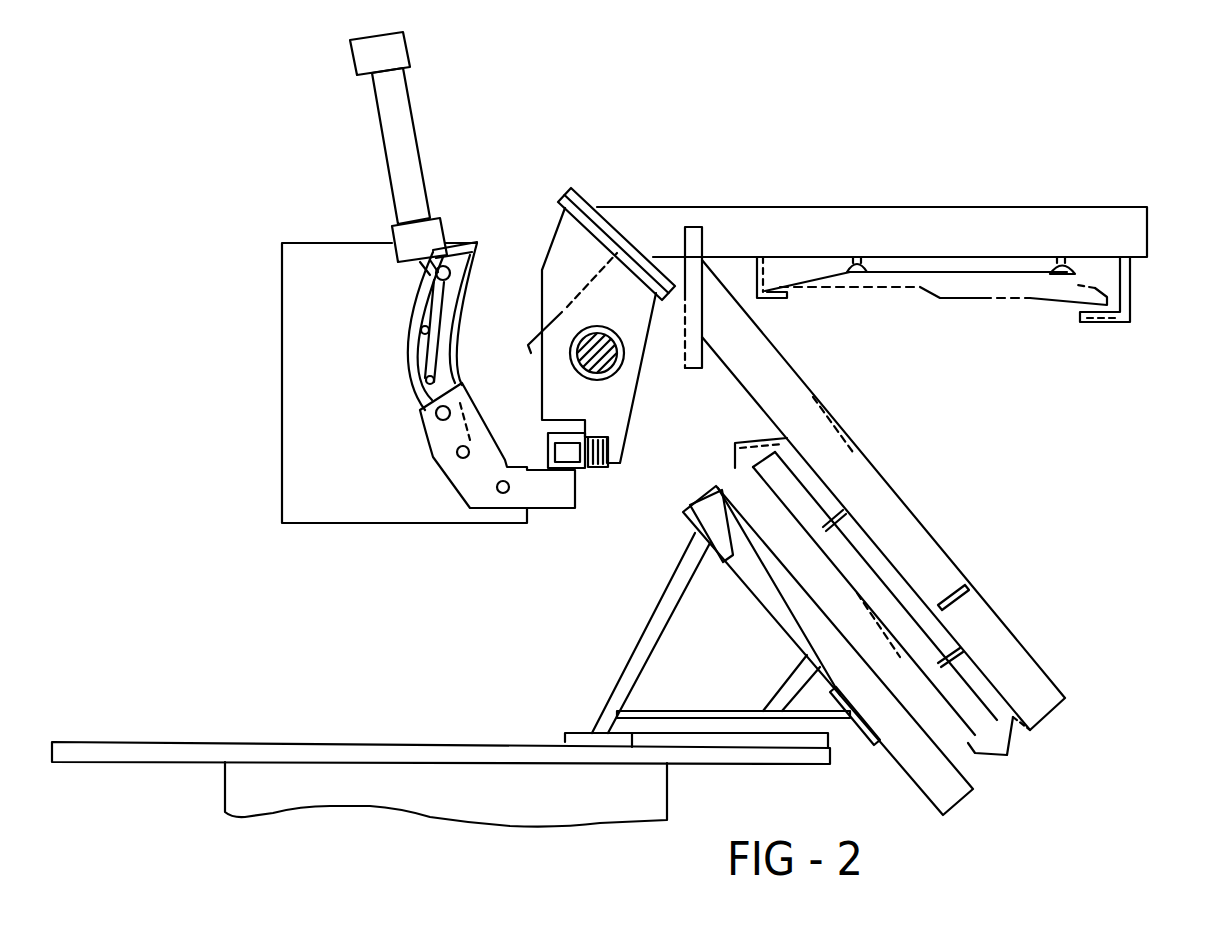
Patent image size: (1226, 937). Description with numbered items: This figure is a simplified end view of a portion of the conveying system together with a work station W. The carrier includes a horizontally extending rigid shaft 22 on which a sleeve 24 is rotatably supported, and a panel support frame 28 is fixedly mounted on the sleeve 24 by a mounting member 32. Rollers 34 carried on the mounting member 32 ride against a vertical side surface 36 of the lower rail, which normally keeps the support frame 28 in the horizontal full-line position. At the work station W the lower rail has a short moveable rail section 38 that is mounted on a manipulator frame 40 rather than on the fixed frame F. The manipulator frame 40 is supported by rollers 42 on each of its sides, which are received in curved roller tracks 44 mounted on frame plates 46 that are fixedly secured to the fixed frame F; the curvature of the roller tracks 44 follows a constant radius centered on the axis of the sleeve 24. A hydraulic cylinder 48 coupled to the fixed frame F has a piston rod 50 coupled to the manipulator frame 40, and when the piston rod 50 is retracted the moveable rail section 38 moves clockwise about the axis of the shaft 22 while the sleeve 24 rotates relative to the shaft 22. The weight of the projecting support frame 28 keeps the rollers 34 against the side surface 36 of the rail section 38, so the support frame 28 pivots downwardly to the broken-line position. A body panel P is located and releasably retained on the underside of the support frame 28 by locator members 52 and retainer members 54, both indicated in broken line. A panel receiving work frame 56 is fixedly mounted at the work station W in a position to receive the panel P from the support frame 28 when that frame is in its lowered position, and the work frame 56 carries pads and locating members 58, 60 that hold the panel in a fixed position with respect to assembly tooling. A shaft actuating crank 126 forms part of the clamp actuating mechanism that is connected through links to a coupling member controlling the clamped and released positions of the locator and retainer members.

The rigid shaft 22 is at (575, 345).
The sleeve 24 is at (572, 360).
The panel support frame 28 is at (896, 200).
The mounting member 32 is at (563, 247).
The rollers 34 is at (687, 367).
The vertical side surface 36 is at (598, 470).
The moveable rail section 38 is at (548, 440).
The manipulator frame 40 is at (553, 500).
The rollers 42 is at (458, 456).
The curved roller tracks 44 is at (412, 353).
The frame plates 46 is at (337, 498).
The hydraulic cylinder 48 is at (372, 108).
The piston rod 50 is at (418, 266).
The locator members 52 is at (835, 258).
The retainer members 54 is at (780, 300).
The panel receiving work frame 56 is at (749, 560).
The pad 58 is at (755, 505).
The locating member 60 is at (960, 767).
The shaft actuating crank 126 is at (883, 573).
The fixed frame F is at (293, 260).
The body panel P is at (983, 300).
The work station W is at (293, 737).